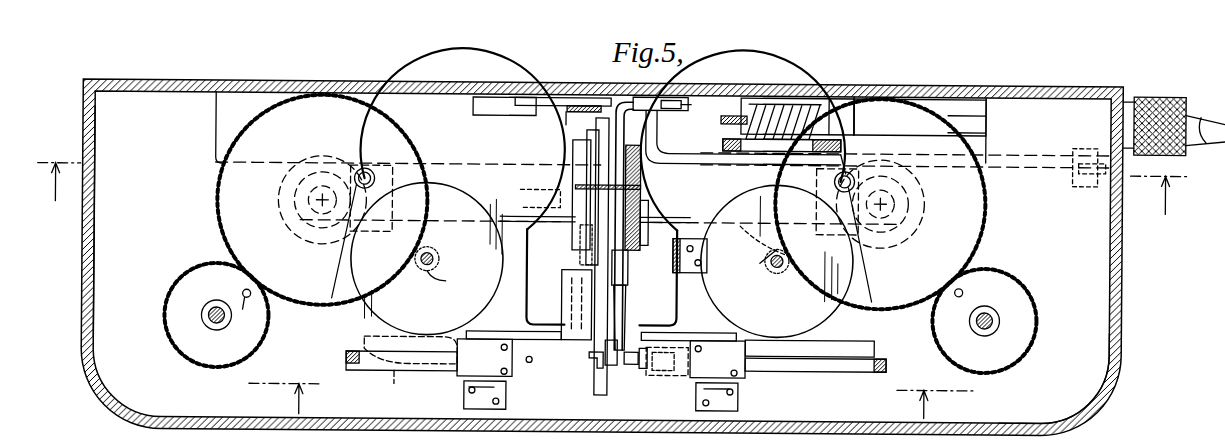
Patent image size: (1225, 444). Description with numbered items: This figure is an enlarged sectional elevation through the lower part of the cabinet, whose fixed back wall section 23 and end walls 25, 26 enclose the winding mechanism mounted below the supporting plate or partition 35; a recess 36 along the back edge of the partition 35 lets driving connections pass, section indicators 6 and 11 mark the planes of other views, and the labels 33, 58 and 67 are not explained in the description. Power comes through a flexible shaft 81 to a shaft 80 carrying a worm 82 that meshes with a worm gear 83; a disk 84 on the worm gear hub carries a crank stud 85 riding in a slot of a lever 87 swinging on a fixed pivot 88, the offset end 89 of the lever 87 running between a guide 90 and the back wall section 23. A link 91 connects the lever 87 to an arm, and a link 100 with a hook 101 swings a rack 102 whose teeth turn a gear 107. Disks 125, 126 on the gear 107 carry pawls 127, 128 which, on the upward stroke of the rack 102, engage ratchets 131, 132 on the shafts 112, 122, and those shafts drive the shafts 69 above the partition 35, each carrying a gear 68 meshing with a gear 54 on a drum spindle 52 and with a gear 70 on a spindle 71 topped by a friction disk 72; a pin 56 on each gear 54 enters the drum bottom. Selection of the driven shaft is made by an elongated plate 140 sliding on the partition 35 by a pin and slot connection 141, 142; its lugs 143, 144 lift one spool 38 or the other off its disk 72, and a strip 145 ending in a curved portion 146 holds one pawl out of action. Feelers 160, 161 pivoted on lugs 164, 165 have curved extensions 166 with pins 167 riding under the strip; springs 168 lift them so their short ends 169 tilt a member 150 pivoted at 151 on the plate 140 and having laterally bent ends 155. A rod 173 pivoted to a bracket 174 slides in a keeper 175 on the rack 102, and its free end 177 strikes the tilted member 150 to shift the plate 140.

The section line 6- 6 is at (611, 401).
The section line 11- 11 is at (613, 189).
The back wall section 23 is at (497, 95).
The end wall 25 is at (1122, 275).
The end wall 26 is at (82, 282).
The casing bottom 33 is at (1033, 442).
The supporting plate or partition 35 is at (1122, 360).
The cut-away portion or recess 36 is at (972, 95).
The spool 38 is at (733, 441).
The spindle 52 is at (202, 318).
The gear 54 is at (248, 344).
The pin 56 is at (1032, 268).
The right large gear 58 is at (985, 222).
The partition 67 is at (245, 268).
The gear 68 is at (215, 226).
The shaft 69 is at (290, 198).
The gear 70 is at (437, 262).
The spindle 71 is at (602, 268).
The disk 72 is at (447, 205).
The shaft 80 is at (955, 112).
The flexible shaft 81 is at (1188, 108).
The worm 82 is at (815, 100).
The worm gear 83 is at (748, 96).
The disk 84 is at (850, 160).
The crank pin or stud 85 is at (838, 100).
The lever 87 is at (690, 158).
The fixed pivot 88 is at (1084, 144).
The opposite end 89 is at (552, 95).
The guide 90 is at (565, 120).
The link 91 is at (566, 110).
The link 100 is at (592, 130).
The offset lower end or hook 101 is at (673, 118).
The rack 102 is at (578, 150).
The gear 107 is at (572, 195).
The shaft 112 is at (674, 129).
The shaft 122 is at (520, 184).
The disk 125 is at (578, 240).
The disk 126 is at (644, 236).
The pawl 127 is at (574, 225).
The pawl 128 is at (756, 239).
The ratchet 131 is at (640, 178).
The ratchet 132 is at (537, 211).
The elongated plate 140 is at (876, 348).
The pin 141 is at (362, 352).
The slot 142 is at (425, 366).
The lug 143 is at (740, 334).
The lug 144 is at (510, 331).
The strip 145 is at (562, 292).
The curved portion 146 is at (640, 254).
The member 150 is at (620, 360).
The pivot 151 is at (632, 366).
The laterally bent ends 155 is at (598, 372).
The feeler or lever 160 is at (643, 392).
The feeler or lever 161 is at (494, 358).
The lug 164 is at (740, 392).
The lug 165 is at (510, 382).
The rearwardly extending portion 166 is at (324, 268).
The stud or pin 167 is at (372, 172).
The spring 168 is at (352, 372).
The short end 169 is at (655, 346).
The rod 173 is at (646, 212).
The bracket 174 is at (700, 96).
The loop or keeper 175 is at (630, 282).
The free end 177 is at (628, 330).